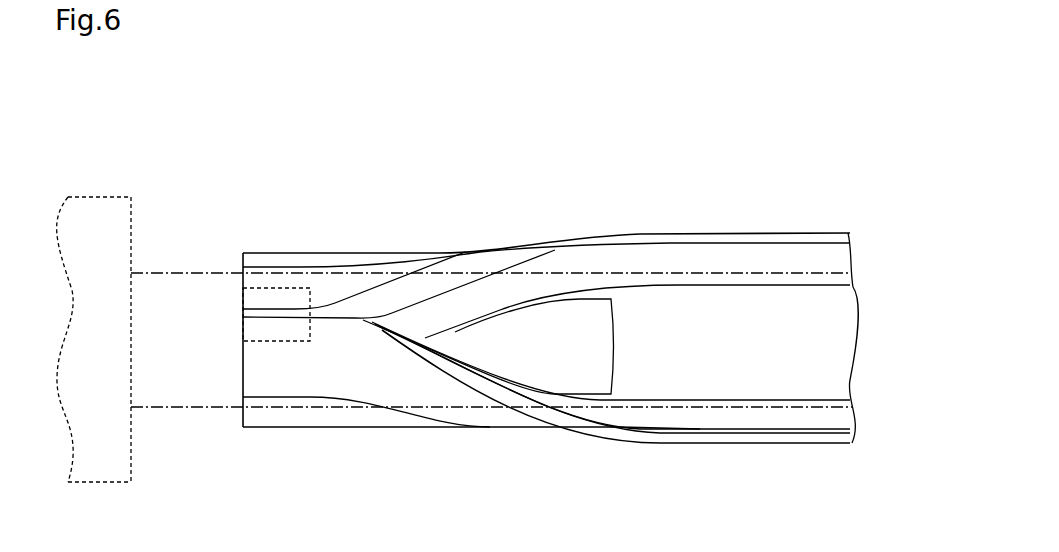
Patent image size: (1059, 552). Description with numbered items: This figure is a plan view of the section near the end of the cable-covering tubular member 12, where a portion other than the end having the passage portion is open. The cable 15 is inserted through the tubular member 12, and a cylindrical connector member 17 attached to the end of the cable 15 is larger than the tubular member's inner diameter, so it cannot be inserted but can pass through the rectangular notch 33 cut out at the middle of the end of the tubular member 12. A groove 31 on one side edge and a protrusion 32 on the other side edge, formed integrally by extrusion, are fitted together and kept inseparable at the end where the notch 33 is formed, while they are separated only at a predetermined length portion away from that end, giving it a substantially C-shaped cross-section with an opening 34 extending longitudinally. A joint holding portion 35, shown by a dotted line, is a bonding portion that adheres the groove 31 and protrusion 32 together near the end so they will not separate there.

The cable-covering tubular member 12 is at (272, 179).
The cable 15 is at (187, 272).
The connector member 17 is at (123, 197).
The groove 31 is at (482, 386).
The protrusion 32 is at (458, 336).
The notch 33 is at (612, 344).
The opening 34 is at (723, 322).
The joint holding portion 35 is at (291, 341).